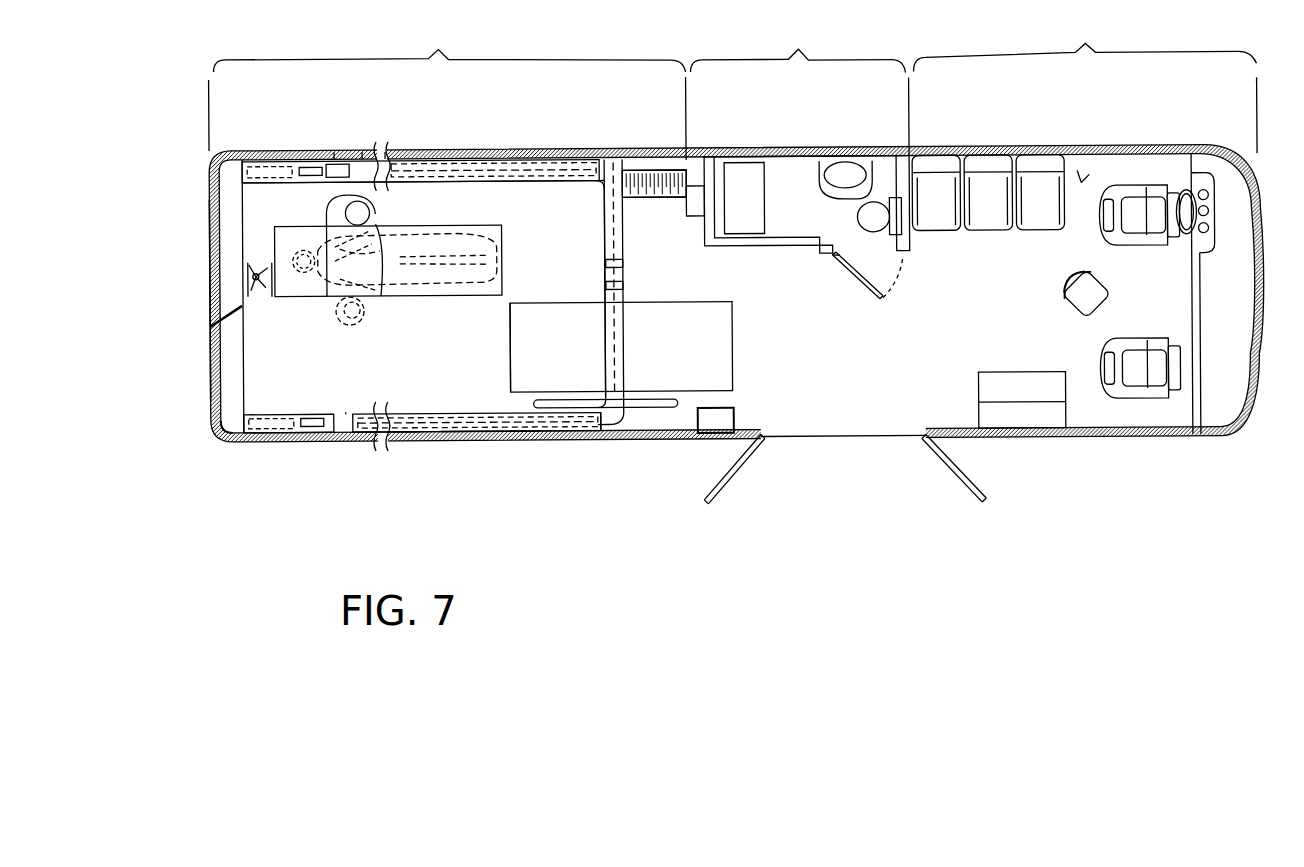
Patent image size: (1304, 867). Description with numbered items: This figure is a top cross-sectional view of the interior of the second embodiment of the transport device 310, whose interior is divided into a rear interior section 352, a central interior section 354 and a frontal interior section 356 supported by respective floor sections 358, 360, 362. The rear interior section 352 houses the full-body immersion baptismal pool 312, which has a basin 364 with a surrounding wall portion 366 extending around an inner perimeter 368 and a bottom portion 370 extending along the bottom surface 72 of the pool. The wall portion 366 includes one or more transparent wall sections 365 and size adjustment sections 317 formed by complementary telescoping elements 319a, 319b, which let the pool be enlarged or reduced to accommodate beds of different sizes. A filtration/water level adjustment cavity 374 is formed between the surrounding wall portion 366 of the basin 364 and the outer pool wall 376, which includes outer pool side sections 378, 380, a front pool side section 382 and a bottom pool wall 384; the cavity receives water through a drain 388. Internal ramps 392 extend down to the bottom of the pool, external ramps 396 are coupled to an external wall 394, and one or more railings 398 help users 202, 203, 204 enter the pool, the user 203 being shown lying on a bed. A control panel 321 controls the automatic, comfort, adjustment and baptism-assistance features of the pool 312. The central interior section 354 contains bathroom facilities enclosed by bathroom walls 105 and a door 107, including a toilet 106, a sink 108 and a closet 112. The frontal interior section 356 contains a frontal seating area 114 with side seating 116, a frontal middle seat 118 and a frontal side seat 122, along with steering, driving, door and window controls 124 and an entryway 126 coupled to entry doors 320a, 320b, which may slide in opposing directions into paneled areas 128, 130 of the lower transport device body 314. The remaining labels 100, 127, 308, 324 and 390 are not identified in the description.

The bottom surface 72 is at (582, 221).
The mobile vehicle 100 is at (377, 445).
The bathroom walls 105 is at (722, 248).
The toilet 106 is at (858, 222).
The door 107 is at (878, 300).
The sink 108 is at (866, 191).
The closet 112 is at (763, 205).
The frontal seating area 114 is at (1082, 188).
The side seating 116 is at (990, 192).
The frontal middle seat 118 is at (1107, 298).
The frontal side seat 122 is at (1170, 408).
The steering, driving, door, and window controls 124 is at (1197, 179).
The entryway 126 is at (1040, 404).
The seat 127 is at (1135, 197).
The paneled area 128 is at (760, 160).
The paneled area 130 is at (1113, 440).
The user 202 is at (340, 330).
The user 203 is at (297, 252).
The user 204 is at (377, 210).
The vehicle body 308 is at (1245, 410).
The transport device 310 is at (1228, 450).
The full-body immersion baptismal pool 312 is at (240, 367).
The lower transport device body 314 is at (683, 443).
The size adjustment sections 317 is at (595, 224).
The telescoping element 319a is at (335, 153).
The telescoping element 319b is at (365, 153).
The entry door 320a is at (737, 479).
The entry door 320b is at (970, 484).
The control panel 321 is at (728, 424).
The rear wall 324 is at (1262, 292).
The rear interior section 352 is at (447, 88).
The central interior section 354 is at (797, 92).
The frontal interior section 356 is at (1085, 87).
The floor section 358 is at (672, 237).
The floor section 360 is at (885, 124).
The floor section 362 is at (1000, 284).
The basin 364 is at (228, 440).
The transparent wall sections 365 is at (208, 320).
The wall portion 366 is at (284, 435).
The inner perimeter 368 is at (455, 152).
The bottom portion 370 is at (295, 219).
The filtration/water level adjustment cavity 374 is at (277, 155).
The outer pool wall 376 is at (490, 452).
The outer pool side section 378 is at (310, 155).
The outer pool side section 380 is at (558, 443).
The front pool side section 382 is at (628, 172).
The bottom pool wall 384 is at (490, 333).
The drain 388 is at (272, 297).
The vent duct 390 is at (690, 188).
The internal ramps 392 is at (522, 380).
The external wall 394 is at (632, 443).
The external ramps 396 is at (682, 332).
The railings 398 is at (663, 443).